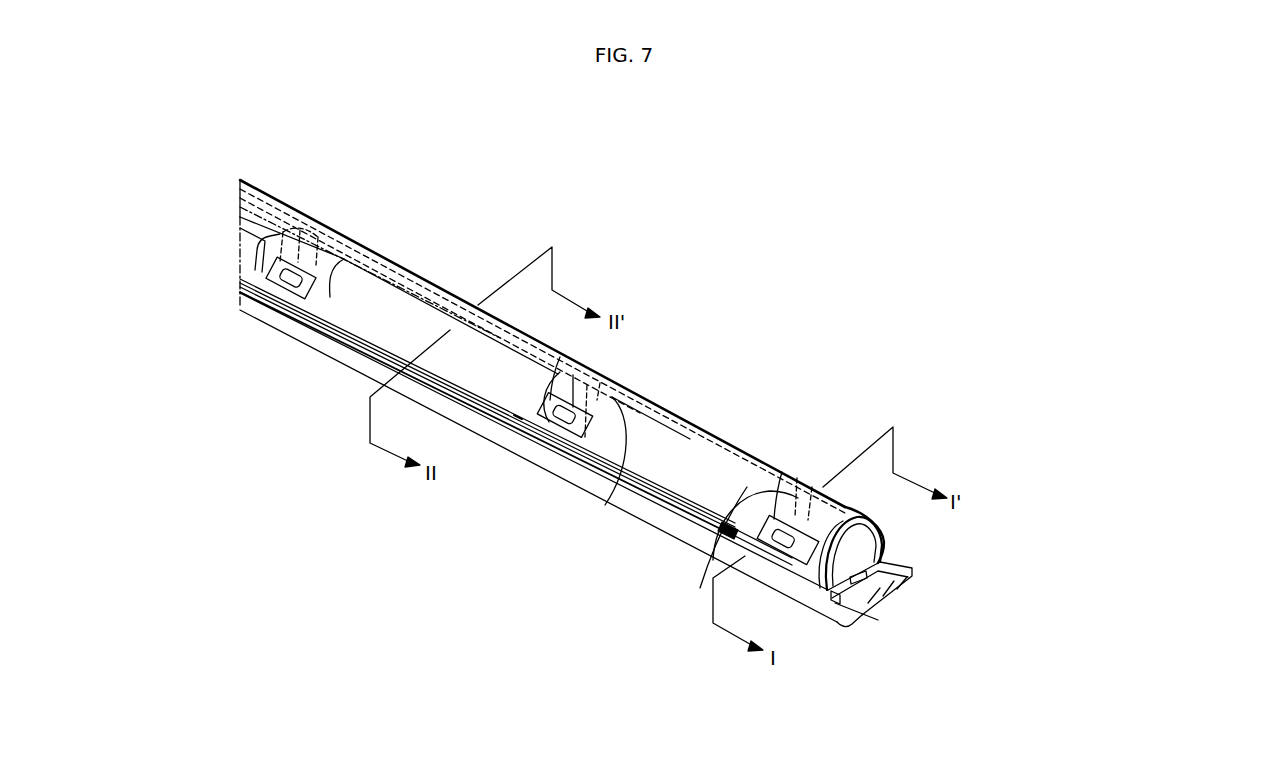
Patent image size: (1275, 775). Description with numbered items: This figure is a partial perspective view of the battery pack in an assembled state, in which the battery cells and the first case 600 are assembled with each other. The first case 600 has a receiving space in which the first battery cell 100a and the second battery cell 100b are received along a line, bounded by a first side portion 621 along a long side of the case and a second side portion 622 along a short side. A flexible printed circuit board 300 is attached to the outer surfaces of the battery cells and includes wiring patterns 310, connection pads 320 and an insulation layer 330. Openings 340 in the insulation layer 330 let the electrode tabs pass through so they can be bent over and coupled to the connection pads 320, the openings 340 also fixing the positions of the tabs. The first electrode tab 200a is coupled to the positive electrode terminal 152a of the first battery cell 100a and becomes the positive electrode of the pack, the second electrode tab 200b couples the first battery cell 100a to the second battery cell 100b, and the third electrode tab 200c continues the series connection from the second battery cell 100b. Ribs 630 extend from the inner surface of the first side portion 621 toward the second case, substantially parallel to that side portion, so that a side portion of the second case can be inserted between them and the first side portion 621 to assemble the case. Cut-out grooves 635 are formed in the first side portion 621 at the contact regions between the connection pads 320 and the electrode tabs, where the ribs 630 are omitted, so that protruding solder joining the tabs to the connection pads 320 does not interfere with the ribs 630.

The flexible printed circuit board 300 is at (457, 290).
The positive electrode terminal 152a is at (866, 538).
The ribs 630 is at (355, 323).
The insulation layer 330 is at (612, 472).
The wiring patterns 310 is at (727, 528).
The connection pads 320 is at (700, 588).
The first battery cell 100a is at (701, 478).
The second battery cell 100b is at (445, 340).
The openings 340 is at (557, 358).
The first electrode tab 200a is at (847, 612).
The second electrode tab 200b is at (578, 392).
The third electrode tab 200c is at (288, 242).
The first case 600 is at (887, 607).
The second side portion 622 is at (907, 583).
The first side portion 621 is at (555, 462).
The cut-out grooves 635 is at (520, 423).